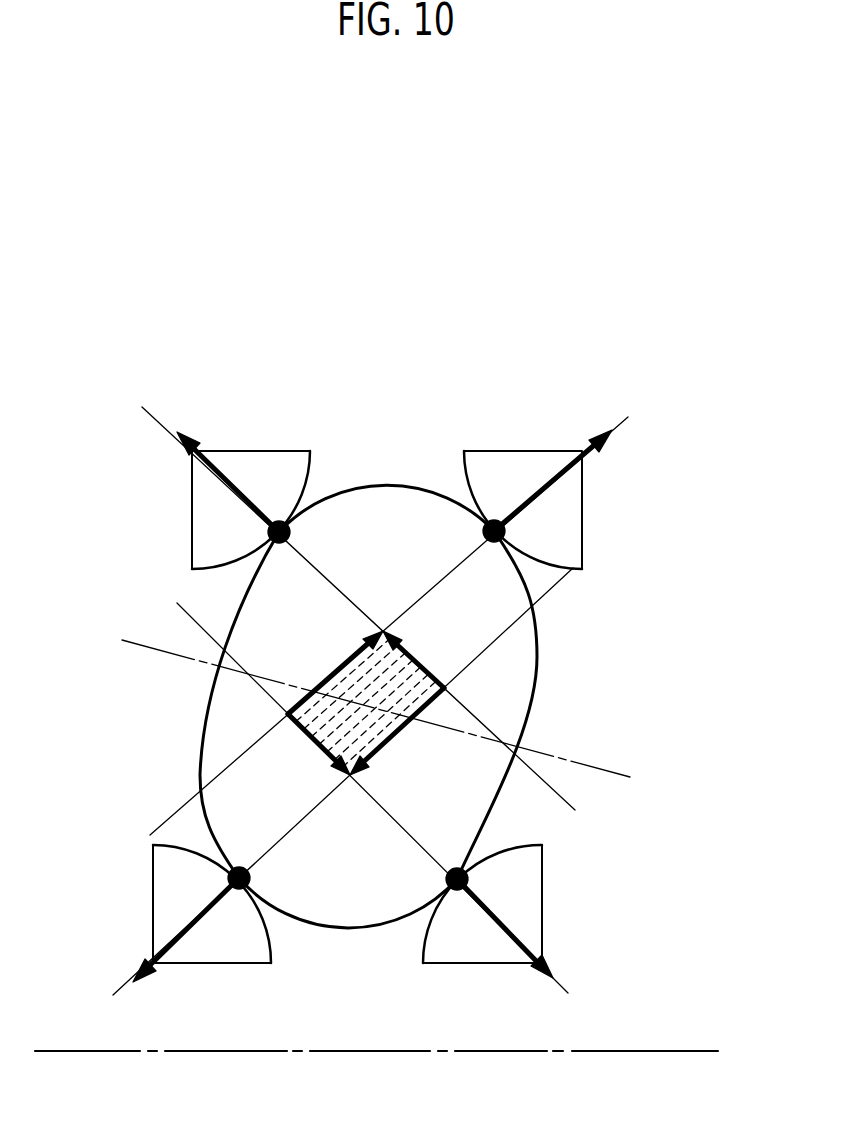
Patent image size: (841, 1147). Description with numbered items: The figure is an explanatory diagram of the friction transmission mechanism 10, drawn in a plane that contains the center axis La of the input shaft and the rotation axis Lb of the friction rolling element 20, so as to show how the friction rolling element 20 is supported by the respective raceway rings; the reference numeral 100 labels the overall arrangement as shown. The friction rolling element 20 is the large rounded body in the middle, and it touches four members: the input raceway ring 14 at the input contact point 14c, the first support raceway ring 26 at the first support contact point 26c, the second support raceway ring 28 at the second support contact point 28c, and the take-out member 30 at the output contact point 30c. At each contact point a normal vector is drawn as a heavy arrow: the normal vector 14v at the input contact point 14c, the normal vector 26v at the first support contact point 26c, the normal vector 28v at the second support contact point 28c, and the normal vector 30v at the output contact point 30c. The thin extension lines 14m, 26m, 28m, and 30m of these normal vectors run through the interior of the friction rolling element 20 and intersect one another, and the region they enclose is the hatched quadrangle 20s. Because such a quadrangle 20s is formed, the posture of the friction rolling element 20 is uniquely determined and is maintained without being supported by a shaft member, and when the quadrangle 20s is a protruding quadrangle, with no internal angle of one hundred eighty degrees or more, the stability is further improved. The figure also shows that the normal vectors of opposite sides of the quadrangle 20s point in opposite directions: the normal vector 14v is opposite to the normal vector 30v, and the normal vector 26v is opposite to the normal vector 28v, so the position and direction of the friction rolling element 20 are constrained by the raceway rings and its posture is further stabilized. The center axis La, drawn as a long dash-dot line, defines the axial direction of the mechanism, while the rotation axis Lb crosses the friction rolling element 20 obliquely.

The mobile robot system 100 is at (733, 363).
The friction transmission mechanism 10 is at (383, 436).
The friction rolling element 20 is at (525, 657).
The quadrangle 20s is at (445, 689).
The input raceway ring 14 is at (536, 870).
The input contact point 14c is at (462, 893).
The extension line 14m is at (413, 838).
The normal vector 14v is at (520, 938).
The first support raceway ring 26 is at (163, 863).
The first support contact point 26c is at (238, 890).
The extension line 26m is at (301, 820).
The normal vector 26v is at (167, 945).
The second support raceway ring 28 is at (557, 453).
The second support contact point 28c is at (495, 522).
The extension line 28m is at (398, 617).
The normal vector 28v is at (557, 482).
The take-out member 30 is at (227, 452).
The output contact point 30c is at (277, 522).
The extension line 30m is at (315, 565).
The normal vector 30v is at (220, 482).
The center axis La is at (615, 1052).
The rotation axis Lb is at (590, 764).